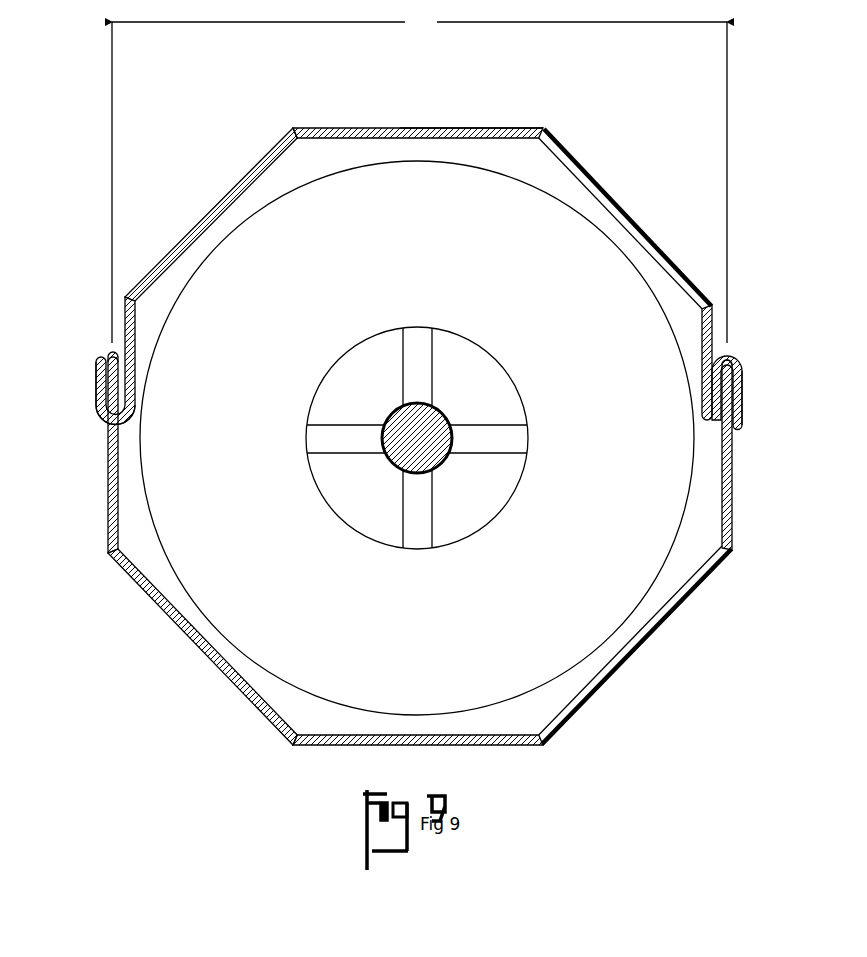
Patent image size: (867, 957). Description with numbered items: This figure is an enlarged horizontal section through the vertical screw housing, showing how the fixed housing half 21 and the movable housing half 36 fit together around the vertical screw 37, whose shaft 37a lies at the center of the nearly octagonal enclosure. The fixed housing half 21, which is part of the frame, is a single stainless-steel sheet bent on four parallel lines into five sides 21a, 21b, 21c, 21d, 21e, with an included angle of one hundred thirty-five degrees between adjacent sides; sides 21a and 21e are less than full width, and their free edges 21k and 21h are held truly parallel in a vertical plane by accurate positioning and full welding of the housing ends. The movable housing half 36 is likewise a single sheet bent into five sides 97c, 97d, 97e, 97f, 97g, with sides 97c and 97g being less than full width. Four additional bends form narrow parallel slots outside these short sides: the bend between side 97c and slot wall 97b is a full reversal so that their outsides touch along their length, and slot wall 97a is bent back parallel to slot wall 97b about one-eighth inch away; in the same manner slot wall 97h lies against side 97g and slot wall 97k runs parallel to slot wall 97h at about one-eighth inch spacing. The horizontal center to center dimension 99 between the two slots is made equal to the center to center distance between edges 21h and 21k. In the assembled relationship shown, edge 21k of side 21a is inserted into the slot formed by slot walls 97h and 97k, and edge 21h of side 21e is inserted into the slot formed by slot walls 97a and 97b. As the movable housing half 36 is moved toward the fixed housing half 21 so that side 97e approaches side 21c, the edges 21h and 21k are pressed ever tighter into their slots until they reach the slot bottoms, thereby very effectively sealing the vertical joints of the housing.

The fixed housing half 21 is at (616, 662).
The side 21a is at (109, 512).
The side 21b is at (222, 672).
The side 21c is at (418, 748).
The side 21d is at (678, 606).
The side 21e is at (734, 502).
The edge 21h is at (728, 356).
The edge 21k is at (112, 354).
The movable housing half 36 is at (504, 127).
The vertical screw 37 is at (566, 195).
The shaft 37a is at (448, 412).
The slot wall 97a is at (743, 396).
The slot wall 97b is at (742, 368).
The side 97c is at (702, 340).
The side 97d is at (638, 220).
The side 97e is at (441, 130).
The side 97f is at (257, 173).
The side 97g is at (137, 336).
The slot wall 97h is at (127, 388).
The slot wall 97k is at (100, 395).
The horizontal center to center dimension 99 is at (419, 177).